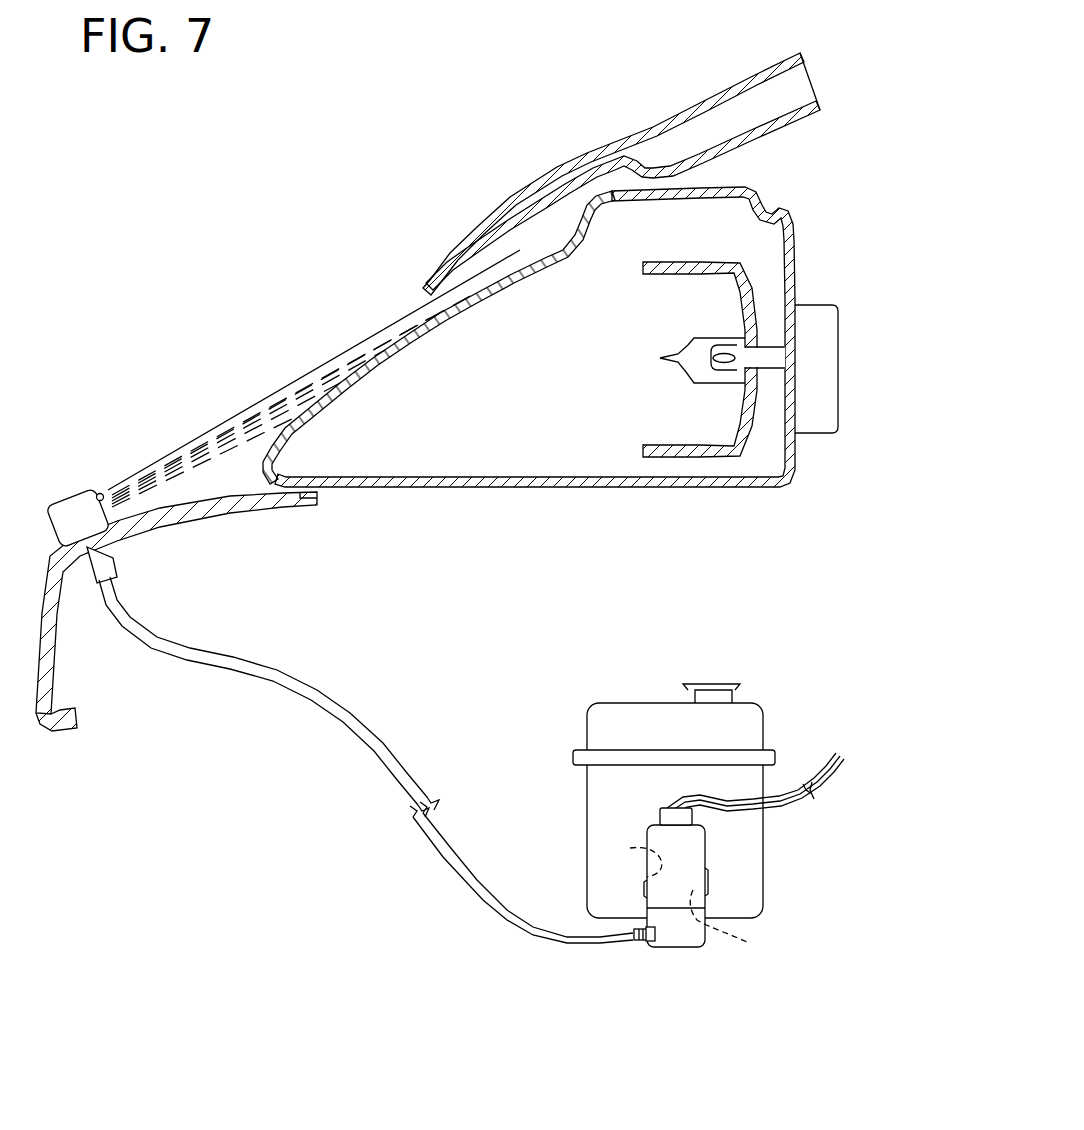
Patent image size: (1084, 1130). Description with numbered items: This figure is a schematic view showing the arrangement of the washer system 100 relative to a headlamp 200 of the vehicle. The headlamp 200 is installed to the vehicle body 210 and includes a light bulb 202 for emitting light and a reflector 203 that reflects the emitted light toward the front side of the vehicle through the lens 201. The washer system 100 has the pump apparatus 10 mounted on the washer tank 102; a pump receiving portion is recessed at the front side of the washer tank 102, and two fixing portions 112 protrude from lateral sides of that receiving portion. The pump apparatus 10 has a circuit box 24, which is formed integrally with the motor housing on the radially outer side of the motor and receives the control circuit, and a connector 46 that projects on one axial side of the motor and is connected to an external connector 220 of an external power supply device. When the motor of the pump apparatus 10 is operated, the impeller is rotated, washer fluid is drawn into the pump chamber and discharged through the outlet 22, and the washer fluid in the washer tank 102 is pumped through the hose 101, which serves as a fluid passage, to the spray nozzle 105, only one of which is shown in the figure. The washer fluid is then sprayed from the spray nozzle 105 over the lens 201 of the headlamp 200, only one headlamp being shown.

The pump apparatus 10 is at (677, 928).
The outlet 22 is at (641, 944).
The circuit box 24 is at (693, 848).
The connector 46 is at (660, 812).
The washer system 100 is at (683, 824).
The hose 101 is at (277, 668).
The washer tank 102 is at (764, 836).
The spray nozzle 105 is at (67, 507).
The fixing portion 112 is at (630, 848).
The headlamp 200 is at (544, 337).
The lens 201 is at (313, 373).
The light bulb 202 is at (687, 371).
The reflector 203 is at (670, 274).
The vehicle body 210 is at (662, 121).
The external connector 220 is at (666, 808).